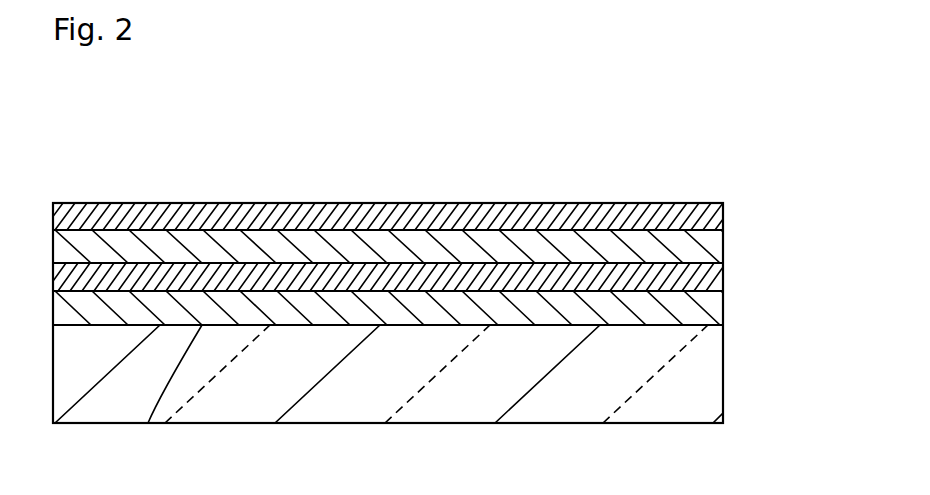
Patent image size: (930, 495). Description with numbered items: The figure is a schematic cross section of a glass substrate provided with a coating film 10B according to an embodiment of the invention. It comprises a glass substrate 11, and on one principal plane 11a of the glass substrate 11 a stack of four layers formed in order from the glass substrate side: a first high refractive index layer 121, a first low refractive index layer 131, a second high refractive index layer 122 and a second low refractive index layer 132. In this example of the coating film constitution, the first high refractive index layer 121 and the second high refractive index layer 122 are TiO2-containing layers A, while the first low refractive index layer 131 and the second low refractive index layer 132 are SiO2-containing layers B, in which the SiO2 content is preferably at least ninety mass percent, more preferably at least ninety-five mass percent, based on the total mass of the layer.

The glass substrate provided with a coating film 10B is at (510, 76).
The glass substrate 11 is at (707, 374).
The principal plane 11a is at (148, 423).
The first high refractive index layer 121 is at (703, 313).
The second high refractive index layer 122 is at (710, 245).
The first low refractive index layer 131 is at (705, 287).
The second low refractive index layer 132 is at (708, 216).